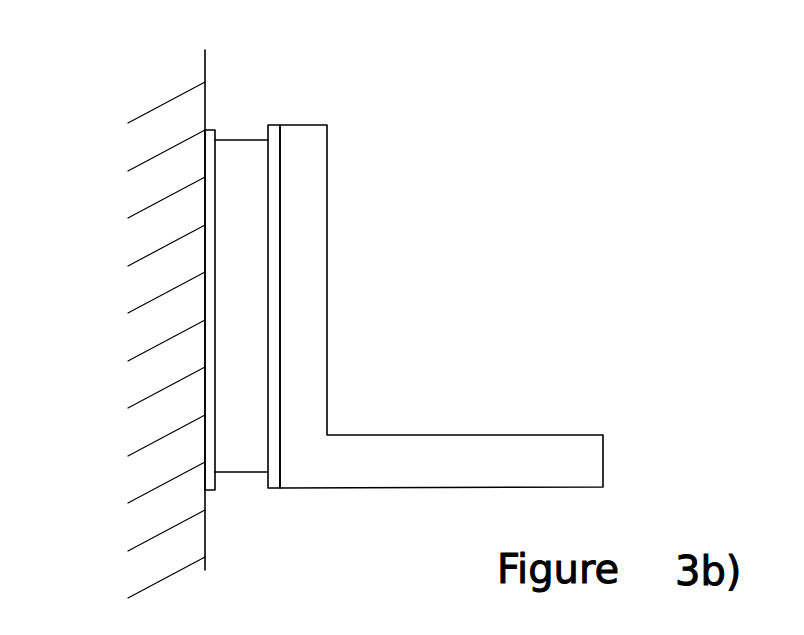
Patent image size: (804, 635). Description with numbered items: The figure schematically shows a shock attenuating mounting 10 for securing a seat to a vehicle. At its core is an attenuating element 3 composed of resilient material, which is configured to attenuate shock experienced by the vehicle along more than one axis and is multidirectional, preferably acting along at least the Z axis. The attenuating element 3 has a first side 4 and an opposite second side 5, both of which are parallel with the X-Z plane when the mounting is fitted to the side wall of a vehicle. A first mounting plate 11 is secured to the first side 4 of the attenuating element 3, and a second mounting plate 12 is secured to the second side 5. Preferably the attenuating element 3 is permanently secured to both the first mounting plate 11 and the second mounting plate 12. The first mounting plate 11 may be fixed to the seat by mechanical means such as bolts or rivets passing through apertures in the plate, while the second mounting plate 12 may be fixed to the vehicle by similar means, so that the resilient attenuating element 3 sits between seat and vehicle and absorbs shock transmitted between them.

The shock attenuating mounting 10 is at (512, 137).
The second mounting plate 12 is at (207, 202).
The second side 5 is at (207, 157).
The attenuating element 3 is at (238, 170).
The first mounting plate 11 is at (268, 125).
The first side 4 is at (276, 152).